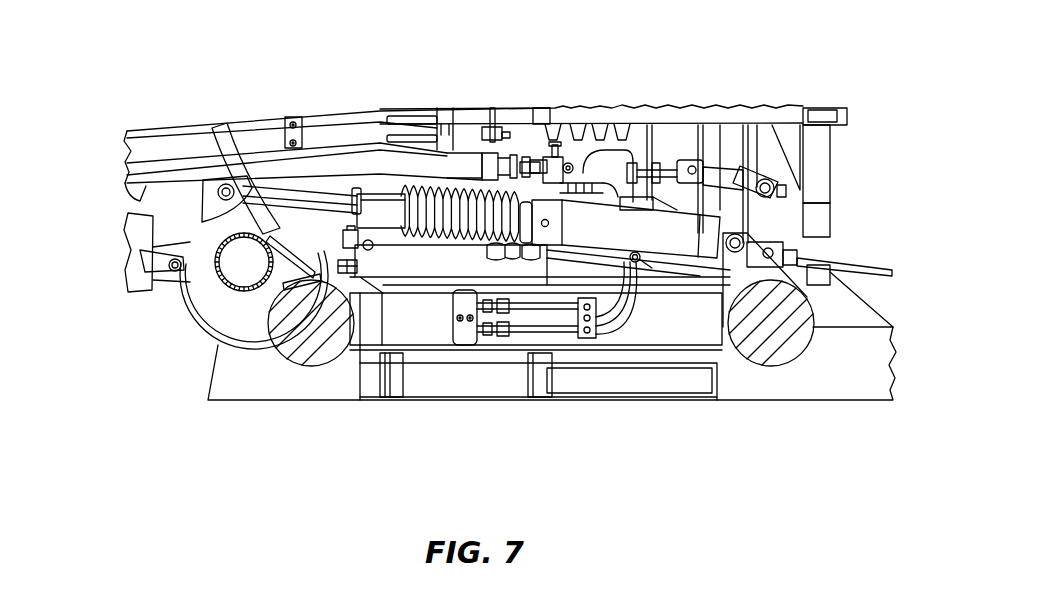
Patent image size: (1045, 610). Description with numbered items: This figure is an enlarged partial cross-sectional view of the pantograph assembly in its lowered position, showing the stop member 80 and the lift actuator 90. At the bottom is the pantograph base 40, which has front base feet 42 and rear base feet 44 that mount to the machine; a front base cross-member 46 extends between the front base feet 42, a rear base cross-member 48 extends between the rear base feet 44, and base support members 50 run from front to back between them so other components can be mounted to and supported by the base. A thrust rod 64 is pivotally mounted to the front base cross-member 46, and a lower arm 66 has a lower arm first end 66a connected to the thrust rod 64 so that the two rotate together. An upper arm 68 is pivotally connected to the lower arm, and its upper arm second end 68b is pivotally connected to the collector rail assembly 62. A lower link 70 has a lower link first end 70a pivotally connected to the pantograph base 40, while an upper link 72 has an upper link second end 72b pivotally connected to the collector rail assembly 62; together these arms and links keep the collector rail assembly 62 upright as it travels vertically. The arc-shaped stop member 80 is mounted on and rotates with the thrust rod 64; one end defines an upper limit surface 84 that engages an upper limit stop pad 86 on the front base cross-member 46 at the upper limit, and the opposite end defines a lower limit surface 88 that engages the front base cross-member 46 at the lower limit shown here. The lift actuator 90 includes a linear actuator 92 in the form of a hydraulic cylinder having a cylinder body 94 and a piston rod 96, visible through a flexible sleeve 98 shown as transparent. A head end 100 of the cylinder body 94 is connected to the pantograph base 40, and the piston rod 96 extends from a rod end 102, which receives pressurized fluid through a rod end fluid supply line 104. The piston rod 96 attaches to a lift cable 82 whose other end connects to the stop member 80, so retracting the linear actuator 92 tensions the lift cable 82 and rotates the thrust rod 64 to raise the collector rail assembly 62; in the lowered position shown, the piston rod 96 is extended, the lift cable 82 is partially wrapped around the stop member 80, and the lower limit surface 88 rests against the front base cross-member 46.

The pantograph base 40 is at (724, 437).
The front base feet 42 is at (250, 387).
The rear base feet 44 is at (855, 383).
The front base cross-member 46 is at (278, 358).
The rear base cross-member 48 is at (787, 362).
The base support members 50 is at (642, 377).
The collector rail assembly 62 is at (853, 109).
The thrust rod 64 is at (233, 290).
The lower arm 66 is at (137, 227).
The lower arm first end 66a is at (148, 282).
The upper arm 68 is at (342, 130).
The upper arm second end 68b is at (592, 113).
The lower link 70 is at (162, 153).
The lower link first end 70a is at (533, 192).
The upper link 72 is at (137, 200).
The upper link second end 72b is at (718, 177).
The stop member 80 is at (198, 289).
The lift cable 82 is at (204, 205).
The upper limit surface 84 is at (272, 197).
The upper limit stop pad 86 is at (316, 266).
The lower limit surface 88 is at (268, 313).
The lift actuator 90 is at (474, 165).
The linear actuator 92 is at (563, 235).
The cylinder body 94 is at (600, 233).
The piston rod 96 is at (448, 190).
The flexible sleeve 98 is at (412, 183).
The head end 100 is at (692, 262).
The rod end 102 is at (540, 205).
The rod end fluid supply line 104 is at (618, 197).